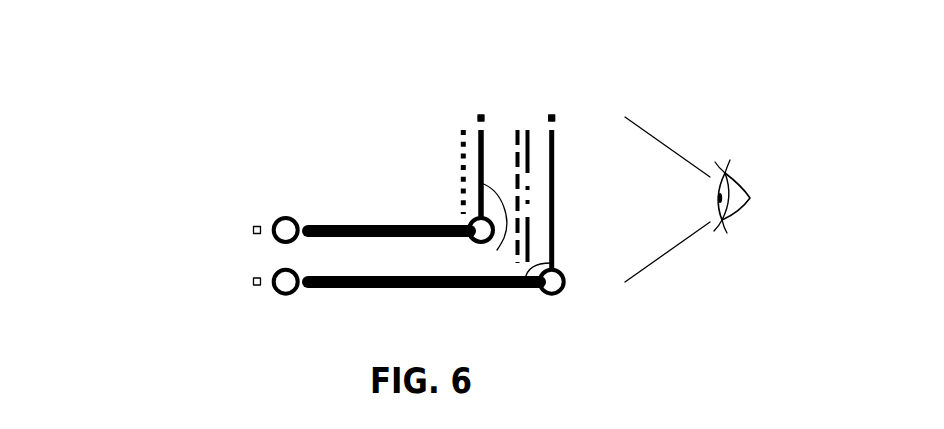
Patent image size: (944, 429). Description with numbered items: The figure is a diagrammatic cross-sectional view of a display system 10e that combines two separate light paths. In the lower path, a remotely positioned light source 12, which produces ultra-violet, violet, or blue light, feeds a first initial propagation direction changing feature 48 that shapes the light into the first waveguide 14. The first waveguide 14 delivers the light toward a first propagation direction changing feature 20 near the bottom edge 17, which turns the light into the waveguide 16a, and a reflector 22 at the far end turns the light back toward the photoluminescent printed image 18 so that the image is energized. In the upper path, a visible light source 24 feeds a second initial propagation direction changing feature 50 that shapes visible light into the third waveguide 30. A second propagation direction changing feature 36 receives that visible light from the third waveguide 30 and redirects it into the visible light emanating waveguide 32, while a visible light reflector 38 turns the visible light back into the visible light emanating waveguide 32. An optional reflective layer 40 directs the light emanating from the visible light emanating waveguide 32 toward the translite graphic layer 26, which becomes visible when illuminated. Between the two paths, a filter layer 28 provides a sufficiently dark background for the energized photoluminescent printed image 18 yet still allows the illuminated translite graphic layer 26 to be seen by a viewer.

The display system 10e is at (613, 95).
The remotely positioned light source 12 is at (253, 282).
The first waveguide 14 is at (418, 289).
The waveguide 16a is at (554, 220).
The bottom edge 17 is at (520, 294).
The photoluminescent printed image 18 is at (554, 183).
The first propagation direction changing feature 20 is at (566, 281).
The reflector 22 is at (557, 118).
The visible light source 24 is at (253, 230).
The translite graphic layer 26 is at (518, 129).
The filter layer 28 is at (528, 129).
The third waveguide 30 is at (357, 224).
The visible light emanating waveguide 32 is at (488, 229).
The second propagation direction changing feature 36 is at (473, 242).
The visible light reflector 38 is at (481, 114).
The reflective layer 40 is at (461, 145).
The first initial propagation direction changing feature 48 is at (285, 296).
The second initial propagation direction changing feature 50 is at (286, 216).